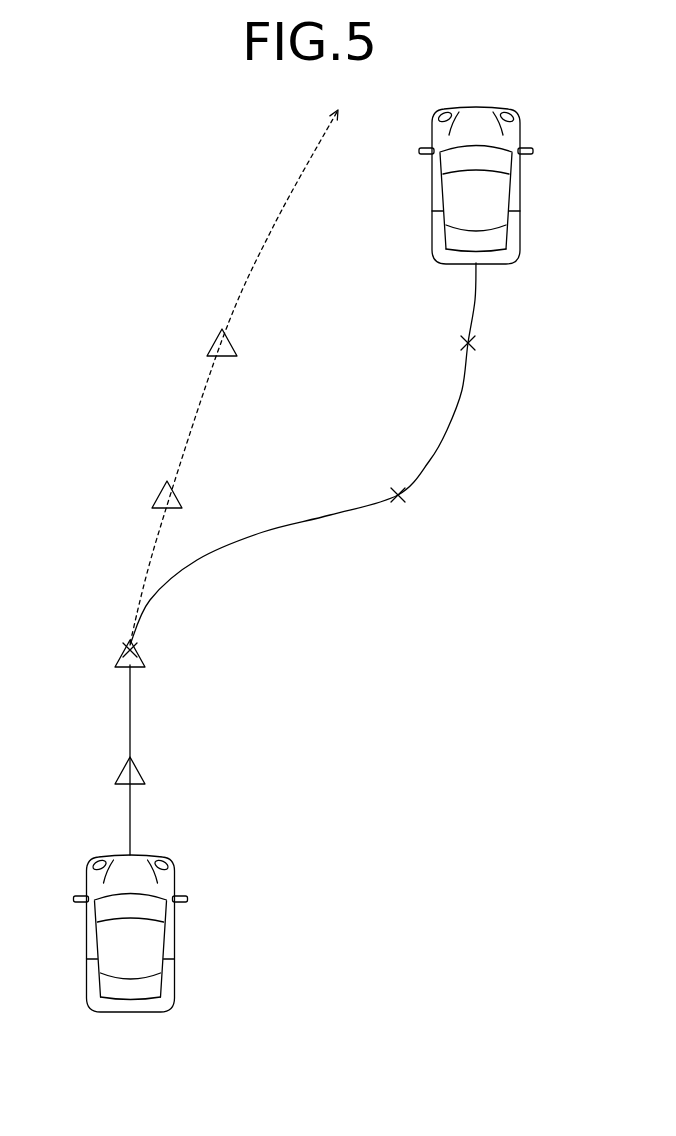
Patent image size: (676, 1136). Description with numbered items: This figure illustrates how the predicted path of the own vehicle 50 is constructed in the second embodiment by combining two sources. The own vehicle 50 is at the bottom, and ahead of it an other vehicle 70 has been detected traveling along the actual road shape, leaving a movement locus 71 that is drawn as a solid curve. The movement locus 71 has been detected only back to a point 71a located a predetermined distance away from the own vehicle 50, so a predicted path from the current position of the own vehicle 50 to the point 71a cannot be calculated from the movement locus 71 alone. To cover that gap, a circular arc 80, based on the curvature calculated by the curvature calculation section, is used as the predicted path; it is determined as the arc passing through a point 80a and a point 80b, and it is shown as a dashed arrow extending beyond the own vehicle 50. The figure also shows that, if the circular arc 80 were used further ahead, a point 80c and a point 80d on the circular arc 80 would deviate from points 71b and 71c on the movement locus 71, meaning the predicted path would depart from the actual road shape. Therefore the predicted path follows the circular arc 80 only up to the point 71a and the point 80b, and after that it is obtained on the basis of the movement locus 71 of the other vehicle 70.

The own vehicle 50 is at (177, 947).
The other vehicle 70 is at (522, 203).
The movement locus 71 is at (475, 300).
The point 71a is at (145, 657).
The point 71b is at (398, 503).
The point 71c is at (475, 347).
The circular arc 80 is at (273, 229).
The point 80a is at (120, 768).
The point 80b is at (120, 651).
The point 80c is at (160, 493).
The point 80d is at (217, 333).